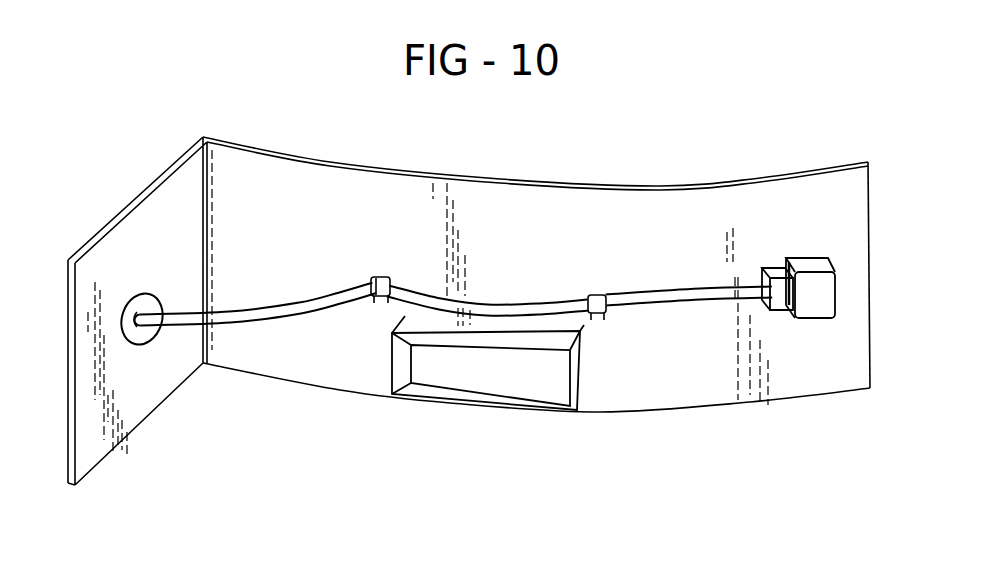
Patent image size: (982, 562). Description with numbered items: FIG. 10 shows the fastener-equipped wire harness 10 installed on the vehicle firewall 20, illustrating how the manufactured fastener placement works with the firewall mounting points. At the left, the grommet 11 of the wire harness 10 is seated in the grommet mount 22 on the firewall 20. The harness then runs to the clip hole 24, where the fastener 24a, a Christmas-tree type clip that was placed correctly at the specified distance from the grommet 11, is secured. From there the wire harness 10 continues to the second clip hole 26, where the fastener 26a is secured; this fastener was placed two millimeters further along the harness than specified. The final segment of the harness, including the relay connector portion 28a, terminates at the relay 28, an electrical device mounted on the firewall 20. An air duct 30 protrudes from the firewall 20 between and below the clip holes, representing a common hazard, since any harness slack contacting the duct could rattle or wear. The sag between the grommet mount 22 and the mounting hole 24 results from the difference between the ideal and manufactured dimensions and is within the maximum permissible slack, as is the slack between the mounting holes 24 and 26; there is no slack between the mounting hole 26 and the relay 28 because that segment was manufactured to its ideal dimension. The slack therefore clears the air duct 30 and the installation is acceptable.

The wire harness 10 is at (275, 296).
The grommet 11 is at (157, 293).
The firewall 20 is at (250, 177).
The grommet mount 22 is at (124, 293).
The clip hole 24 is at (383, 273).
The fastener 24a is at (380, 300).
The second clip hole 26 is at (598, 296).
The fastener 26a is at (597, 314).
The relay 28 is at (812, 258).
The relay connector portion 28a is at (778, 267).
The air duct 30 is at (467, 392).